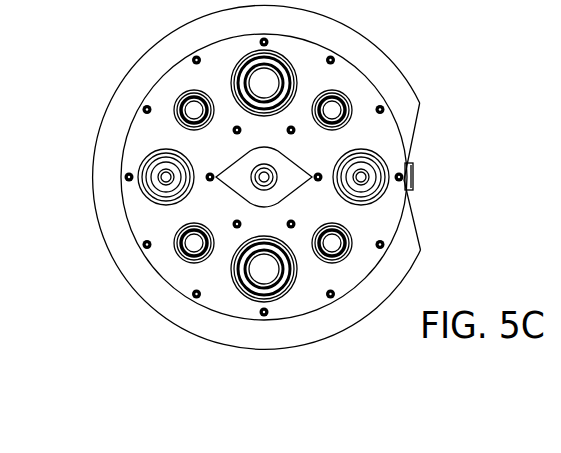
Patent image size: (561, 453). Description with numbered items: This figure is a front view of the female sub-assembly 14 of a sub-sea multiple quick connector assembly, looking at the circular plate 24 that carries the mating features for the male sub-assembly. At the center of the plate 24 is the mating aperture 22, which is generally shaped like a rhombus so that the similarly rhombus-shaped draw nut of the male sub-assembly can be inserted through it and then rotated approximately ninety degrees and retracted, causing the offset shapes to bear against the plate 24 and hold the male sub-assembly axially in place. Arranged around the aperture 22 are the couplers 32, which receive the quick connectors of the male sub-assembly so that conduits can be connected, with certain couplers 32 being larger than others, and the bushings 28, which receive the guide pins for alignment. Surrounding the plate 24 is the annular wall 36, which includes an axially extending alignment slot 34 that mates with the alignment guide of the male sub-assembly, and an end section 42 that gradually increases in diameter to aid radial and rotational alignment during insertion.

The female sub-assembly 14 is at (104, 49).
The mating aperture 22 is at (290, 160).
The circular plate 24 is at (134, 133).
The bushings 28 is at (162, 181).
The couplers 32 is at (254, 78).
The alignment slot 34 is at (430, 206).
The annular wall 36 is at (386, 297).
The end section 42 is at (123, 252).